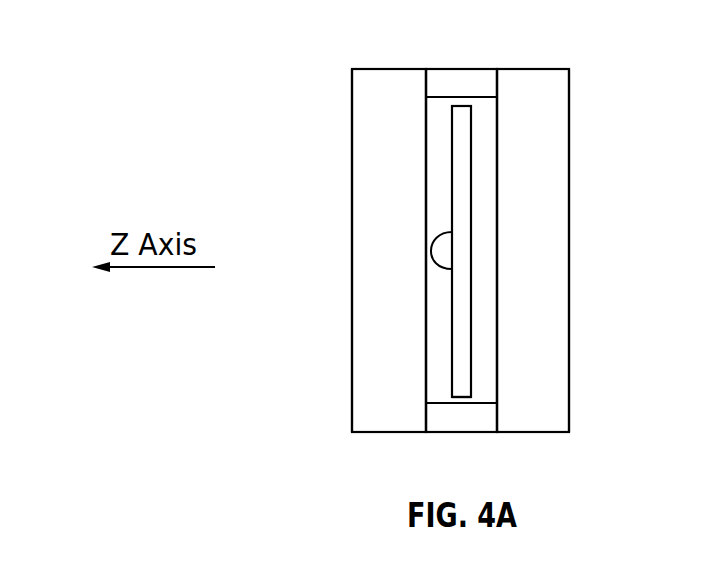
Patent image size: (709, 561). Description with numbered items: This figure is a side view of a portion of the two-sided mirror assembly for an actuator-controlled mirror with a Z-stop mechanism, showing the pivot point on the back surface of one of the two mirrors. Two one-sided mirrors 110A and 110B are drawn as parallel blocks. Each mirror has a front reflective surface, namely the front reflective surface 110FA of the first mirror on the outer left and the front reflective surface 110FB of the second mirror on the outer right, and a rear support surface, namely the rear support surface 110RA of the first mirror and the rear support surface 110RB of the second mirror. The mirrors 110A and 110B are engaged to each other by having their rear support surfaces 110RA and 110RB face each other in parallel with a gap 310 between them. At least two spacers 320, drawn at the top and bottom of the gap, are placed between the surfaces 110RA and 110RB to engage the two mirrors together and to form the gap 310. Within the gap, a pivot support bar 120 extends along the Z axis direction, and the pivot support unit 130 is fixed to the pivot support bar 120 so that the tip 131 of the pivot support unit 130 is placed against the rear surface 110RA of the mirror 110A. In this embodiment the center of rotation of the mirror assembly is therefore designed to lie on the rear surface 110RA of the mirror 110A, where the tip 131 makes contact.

The one-sided mirror 110A is at (389, 69).
The one-sided mirror 110B is at (533, 69).
The front reflective surface 110FA is at (352, 268).
The rear support surface 110RA is at (426, 332).
The rear support surface 110RB is at (497, 333).
The front reflective surface 110FB is at (569, 378).
The pivot support bar 120 is at (460, 387).
The pivot support unit 130 is at (447, 251).
The tip 131 is at (426, 251).
The gap 310 is at (485, 162).
The spacers 320 is at (460, 69).